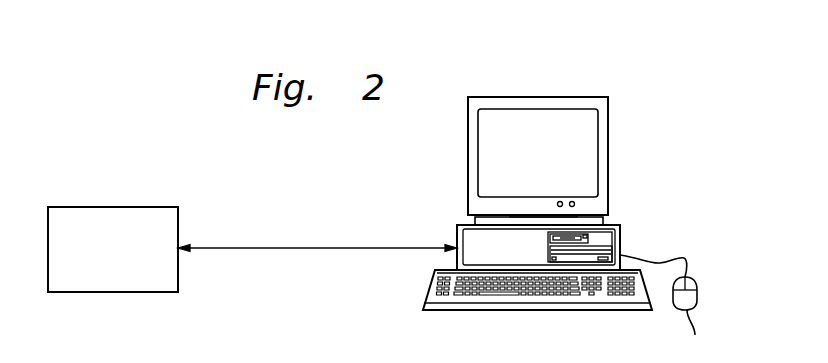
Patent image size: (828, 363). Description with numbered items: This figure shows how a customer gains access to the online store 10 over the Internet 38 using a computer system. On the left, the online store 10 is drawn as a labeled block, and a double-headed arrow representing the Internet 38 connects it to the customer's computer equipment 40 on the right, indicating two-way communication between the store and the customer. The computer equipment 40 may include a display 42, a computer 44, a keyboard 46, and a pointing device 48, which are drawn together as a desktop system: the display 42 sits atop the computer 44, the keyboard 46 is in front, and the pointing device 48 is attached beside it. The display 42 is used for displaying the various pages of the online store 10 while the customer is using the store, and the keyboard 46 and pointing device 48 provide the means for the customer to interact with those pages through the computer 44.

The online store 10 is at (114, 207).
The Internet 38 is at (318, 248).
The computer equipment 40 is at (550, 88).
The display 42 is at (585, 158).
The computer 44 is at (622, 246).
The keyboard 46 is at (540, 312).
The pointing device 48 is at (663, 309).